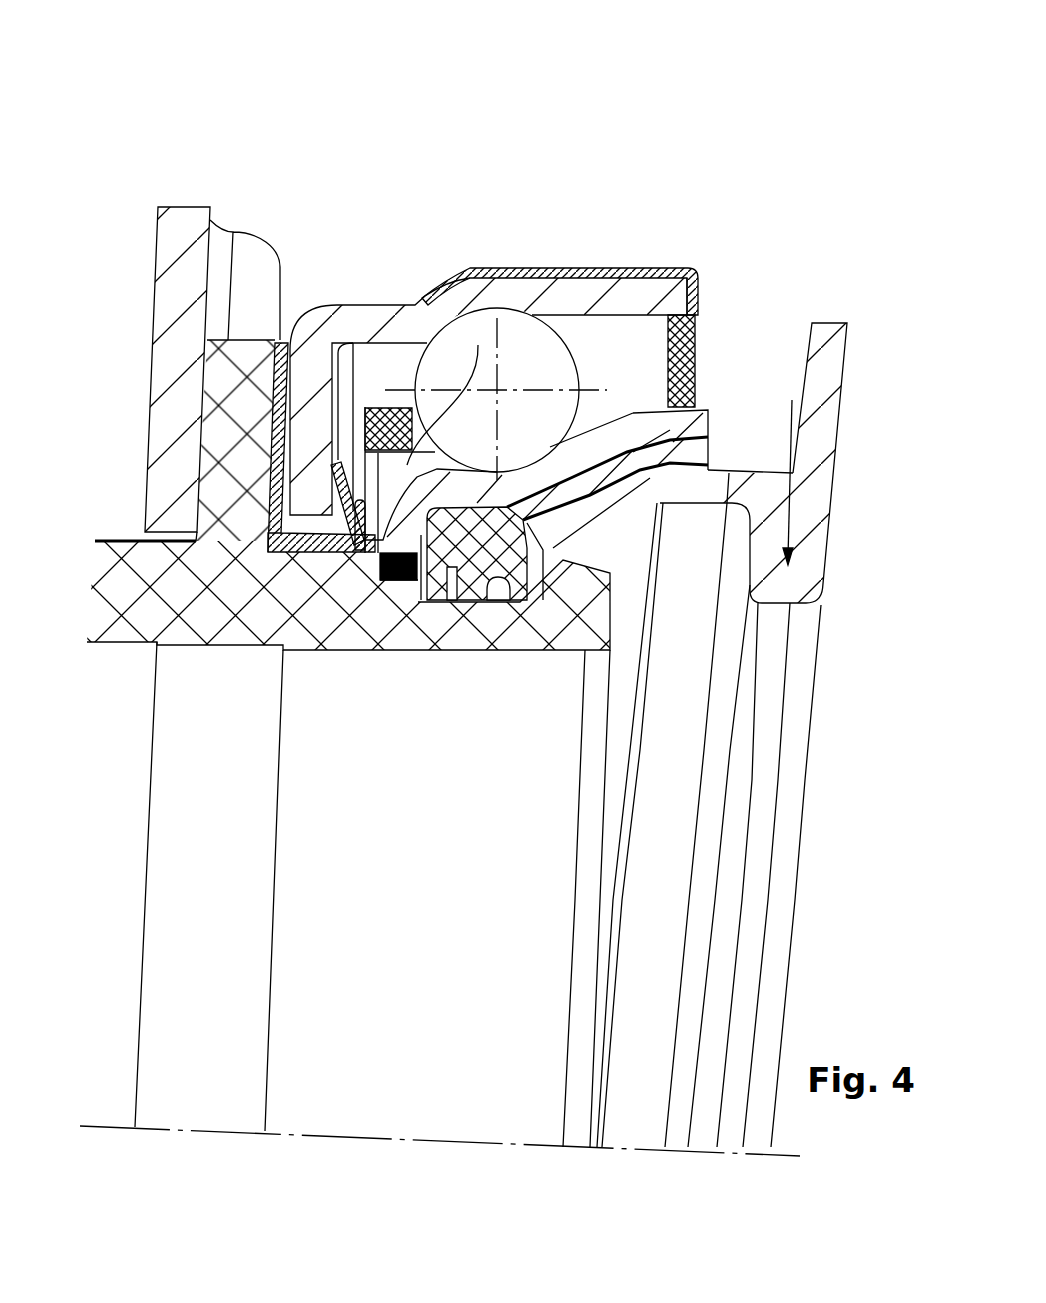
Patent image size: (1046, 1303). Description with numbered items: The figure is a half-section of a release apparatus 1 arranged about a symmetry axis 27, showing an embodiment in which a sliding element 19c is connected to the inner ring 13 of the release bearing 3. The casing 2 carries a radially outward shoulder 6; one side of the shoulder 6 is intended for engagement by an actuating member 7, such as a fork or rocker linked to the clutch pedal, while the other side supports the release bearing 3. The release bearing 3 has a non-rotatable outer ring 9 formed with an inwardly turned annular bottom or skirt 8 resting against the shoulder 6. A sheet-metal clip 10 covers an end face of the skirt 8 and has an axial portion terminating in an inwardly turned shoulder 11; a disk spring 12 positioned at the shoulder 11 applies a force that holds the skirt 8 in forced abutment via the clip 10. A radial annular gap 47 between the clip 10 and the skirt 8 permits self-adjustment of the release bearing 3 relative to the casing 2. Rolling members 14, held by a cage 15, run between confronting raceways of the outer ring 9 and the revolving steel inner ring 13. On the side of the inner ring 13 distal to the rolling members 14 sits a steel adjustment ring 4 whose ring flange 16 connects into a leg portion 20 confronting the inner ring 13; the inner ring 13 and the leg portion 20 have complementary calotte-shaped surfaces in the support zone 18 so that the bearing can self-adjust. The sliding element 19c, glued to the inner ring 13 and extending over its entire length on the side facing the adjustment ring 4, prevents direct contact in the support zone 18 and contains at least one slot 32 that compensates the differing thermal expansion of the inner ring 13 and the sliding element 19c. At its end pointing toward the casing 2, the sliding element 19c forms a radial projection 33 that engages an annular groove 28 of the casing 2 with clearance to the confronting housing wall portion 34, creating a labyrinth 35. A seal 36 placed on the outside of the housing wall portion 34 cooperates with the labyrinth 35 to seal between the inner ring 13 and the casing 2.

The release apparatus 1 is at (305, 258).
The casing 2 is at (143, 620).
The release bearing 3 is at (695, 250).
The adjustment ring 4 is at (787, 583).
The radial shoulder 6 is at (220, 372).
The actuating member 7 is at (168, 295).
The skirt 8 is at (297, 433).
The outer ring 9 is at (347, 300).
The clip 10 is at (272, 482).
The inwardly turned shoulder 11 is at (368, 548).
The disk spring 12 is at (293, 550).
The inner ring 13 is at (713, 437).
The rolling members 14 is at (450, 360).
The cage 15 is at (478, 345).
The ring flange 16 is at (823, 323).
The support zone 18 is at (622, 452).
The sliding element 19c is at (712, 452).
The leg portion 20 is at (632, 497).
The symmetry axis 27 is at (353, 1127).
The annular groove 28 is at (512, 603).
The slot 32 is at (642, 460).
The radial projection 33 is at (462, 607).
The housing wall portion 34 is at (400, 604).
The labyrinth 35 is at (430, 605).
The seal 36 is at (388, 582).
The radial annular gap 47 is at (267, 535).